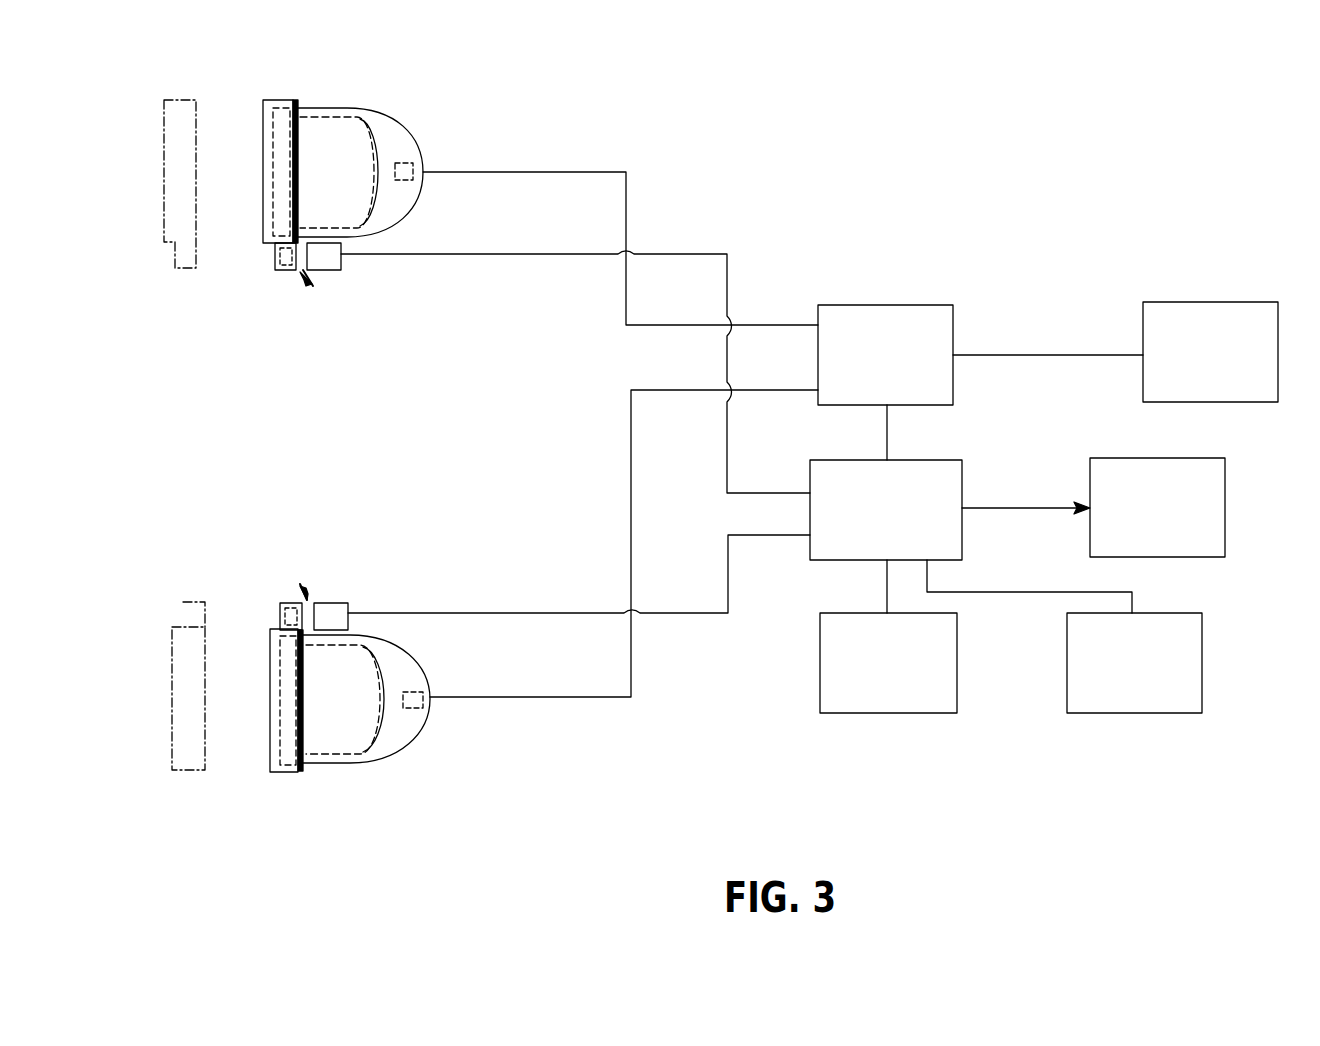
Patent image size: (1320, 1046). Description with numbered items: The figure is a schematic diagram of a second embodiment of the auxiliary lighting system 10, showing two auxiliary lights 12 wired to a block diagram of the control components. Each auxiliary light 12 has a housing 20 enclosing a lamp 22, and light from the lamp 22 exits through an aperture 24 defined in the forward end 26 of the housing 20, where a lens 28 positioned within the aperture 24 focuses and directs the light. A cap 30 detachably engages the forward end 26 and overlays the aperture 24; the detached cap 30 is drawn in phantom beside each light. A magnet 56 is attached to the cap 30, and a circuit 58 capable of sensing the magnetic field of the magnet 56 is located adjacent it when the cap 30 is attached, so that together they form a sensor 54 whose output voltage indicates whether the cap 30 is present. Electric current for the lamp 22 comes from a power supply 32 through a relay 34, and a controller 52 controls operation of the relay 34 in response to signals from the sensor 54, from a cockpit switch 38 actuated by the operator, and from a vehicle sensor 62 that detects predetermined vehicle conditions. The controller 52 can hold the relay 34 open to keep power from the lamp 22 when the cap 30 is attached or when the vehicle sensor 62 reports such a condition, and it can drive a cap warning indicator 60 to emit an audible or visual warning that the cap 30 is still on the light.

The auxiliary lighting system 10 is at (920, 126).
The auxiliary light 12 is at (353, 105).
The housing 20 is at (328, 108).
The lamp 22 is at (420, 141).
The aperture 24 is at (279, 172).
The forward end 26 is at (293, 100).
The lens 28 is at (263, 152).
The cap 30 is at (187, 100).
The power supply 32 is at (1212, 302).
The relay 34 is at (878, 305).
The cockpit switch 38 is at (848, 713).
The controller 52 is at (962, 525).
The sensor 54 is at (310, 284).
The magnet 56 is at (274, 257).
The circuit 58 is at (328, 270).
The cap warning indicator 60 is at (1225, 510).
The vehicle sensor 62 is at (1135, 713).